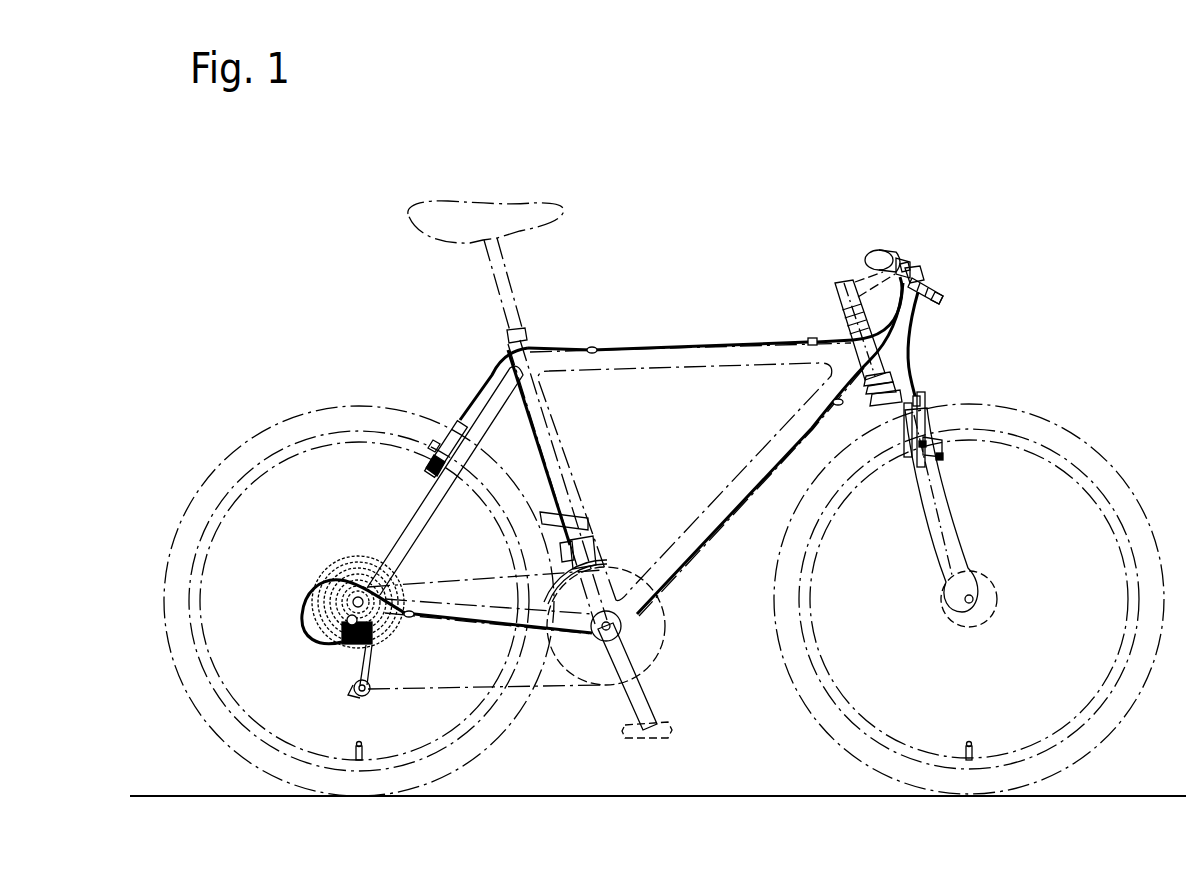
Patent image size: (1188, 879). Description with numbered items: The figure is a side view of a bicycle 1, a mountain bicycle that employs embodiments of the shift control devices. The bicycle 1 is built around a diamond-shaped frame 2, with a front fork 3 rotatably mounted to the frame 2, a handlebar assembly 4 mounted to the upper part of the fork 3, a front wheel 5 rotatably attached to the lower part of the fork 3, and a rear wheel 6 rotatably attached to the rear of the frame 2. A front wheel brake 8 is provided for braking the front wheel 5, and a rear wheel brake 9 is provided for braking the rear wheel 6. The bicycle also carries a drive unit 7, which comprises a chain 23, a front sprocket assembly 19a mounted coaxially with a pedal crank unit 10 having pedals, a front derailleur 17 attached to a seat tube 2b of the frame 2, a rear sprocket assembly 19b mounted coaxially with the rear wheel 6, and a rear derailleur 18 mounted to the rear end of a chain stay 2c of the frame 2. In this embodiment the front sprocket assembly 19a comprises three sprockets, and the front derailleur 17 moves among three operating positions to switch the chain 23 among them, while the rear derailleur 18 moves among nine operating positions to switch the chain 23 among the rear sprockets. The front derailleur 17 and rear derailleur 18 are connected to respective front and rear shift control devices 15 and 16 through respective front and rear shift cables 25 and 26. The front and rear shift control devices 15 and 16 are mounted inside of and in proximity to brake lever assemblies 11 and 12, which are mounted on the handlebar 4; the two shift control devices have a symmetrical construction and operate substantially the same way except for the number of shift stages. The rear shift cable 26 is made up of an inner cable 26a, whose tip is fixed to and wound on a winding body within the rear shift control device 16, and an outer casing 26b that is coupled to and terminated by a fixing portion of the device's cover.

The bicycle 1 is at (727, 316).
The frame 2 is at (749, 332).
The seat tube 2b is at (590, 487).
The chain stay 2c is at (468, 626).
The front fork 3 is at (917, 480).
The handlebar assembly 4 is at (897, 258).
The front wheel 5 is at (1097, 452).
The rear wheel 6 is at (278, 425).
The drive unit 7 is at (583, 698).
The front wheel brake 8 is at (925, 403).
The rear wheel brake 9 is at (456, 425).
The pedal crank unit 10 is at (647, 702).
The brake lever assembly 11 is at (956, 257).
The brake lever assembly 12 is at (925, 290).
The front shift control device 15 is at (927, 221).
The rear shift control device 16 is at (905, 262).
The front derailleur 17 is at (587, 537).
The rear derailleur 18 is at (353, 650).
The front sprocket assembly 19a is at (660, 653).
The rear sprocket assembly 19b is at (307, 612).
The chain 23 is at (450, 692).
The front shift cable 25 is at (537, 456).
The rear shift cable 26 is at (840, 372).
The inner cable 26a is at (708, 540).
The outer casing 26b is at (905, 366).